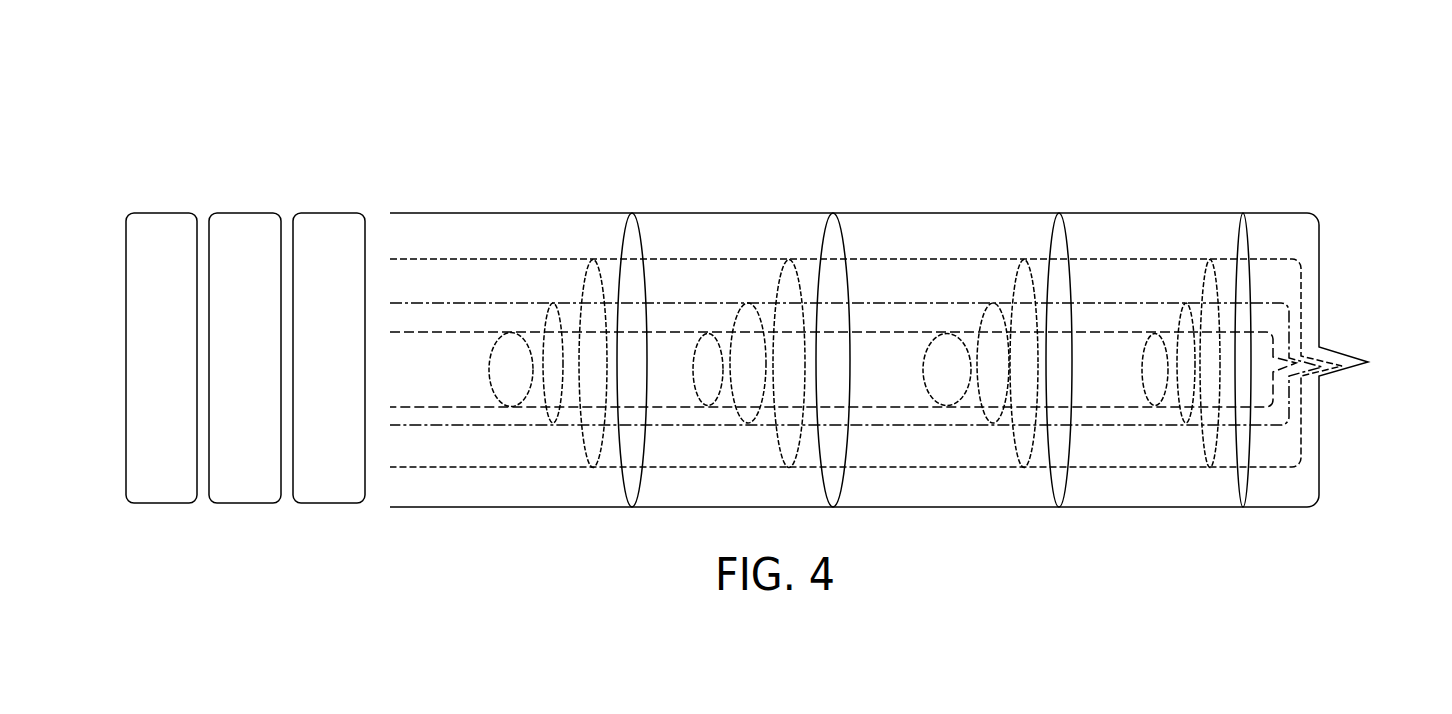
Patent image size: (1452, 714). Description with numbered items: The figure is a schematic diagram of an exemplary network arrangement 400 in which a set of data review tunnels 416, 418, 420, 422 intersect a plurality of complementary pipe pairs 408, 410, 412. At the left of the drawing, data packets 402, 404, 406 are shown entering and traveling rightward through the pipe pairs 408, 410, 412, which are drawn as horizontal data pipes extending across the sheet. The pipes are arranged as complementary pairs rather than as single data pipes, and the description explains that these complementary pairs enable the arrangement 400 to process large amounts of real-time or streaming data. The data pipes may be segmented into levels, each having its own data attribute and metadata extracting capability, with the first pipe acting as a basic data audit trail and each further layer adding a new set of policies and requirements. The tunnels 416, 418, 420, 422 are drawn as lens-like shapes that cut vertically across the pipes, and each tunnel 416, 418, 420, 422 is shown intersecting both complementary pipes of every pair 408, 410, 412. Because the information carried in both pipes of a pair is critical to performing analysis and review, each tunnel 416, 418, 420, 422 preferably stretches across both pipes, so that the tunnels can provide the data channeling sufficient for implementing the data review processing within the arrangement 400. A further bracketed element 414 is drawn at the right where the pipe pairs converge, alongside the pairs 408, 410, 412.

The arrangement 400 is at (218, 80).
The data packet 402 is at (143, 212).
The data packet 404 is at (228, 212).
The data packet 406 is at (306, 212).
The complementary pipe pair 408 is at (1368, 362).
The complementary pipe pair 410 is at (1342, 366).
The complementary pipe pair 412 is at (1322, 367).
The nth light path 414 is at (1296, 363).
The data review tunnel 416 is at (508, 405).
The data review tunnel 418 is at (548, 408).
The data review tunnel 420 is at (595, 463).
The data review tunnel 422 is at (632, 507).